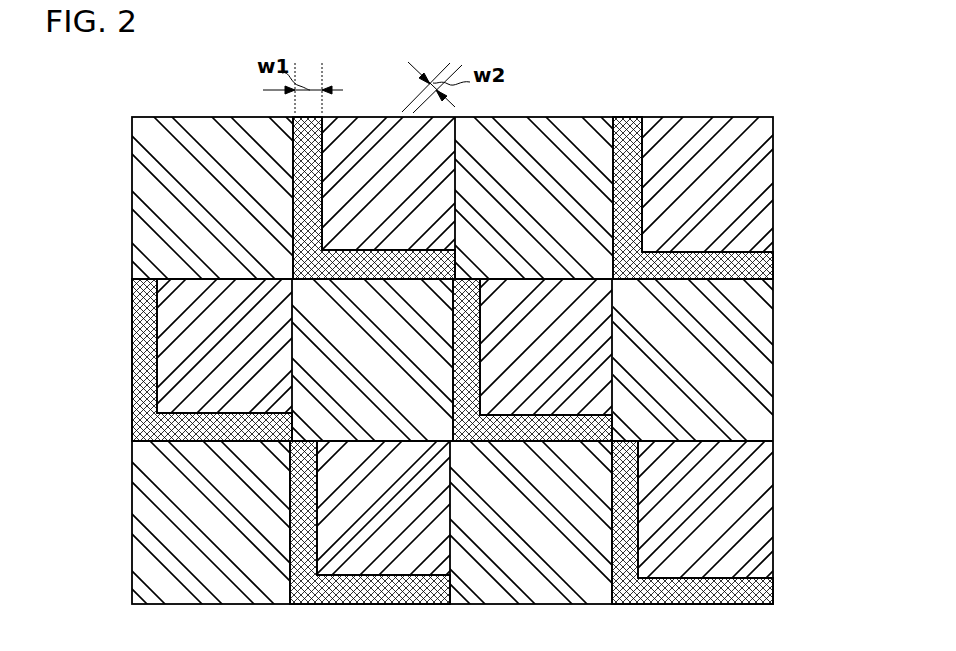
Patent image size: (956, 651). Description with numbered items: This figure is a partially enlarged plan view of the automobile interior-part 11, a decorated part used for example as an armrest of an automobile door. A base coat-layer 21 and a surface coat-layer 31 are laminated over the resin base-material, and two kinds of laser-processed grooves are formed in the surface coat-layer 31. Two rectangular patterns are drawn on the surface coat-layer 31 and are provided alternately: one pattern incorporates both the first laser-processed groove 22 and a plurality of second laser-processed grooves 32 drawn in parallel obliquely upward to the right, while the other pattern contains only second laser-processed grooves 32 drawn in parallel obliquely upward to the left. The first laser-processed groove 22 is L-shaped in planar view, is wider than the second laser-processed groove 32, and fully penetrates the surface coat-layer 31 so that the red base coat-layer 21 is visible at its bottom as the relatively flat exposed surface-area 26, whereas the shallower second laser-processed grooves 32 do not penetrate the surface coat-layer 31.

The automobile interior-part 11 is at (103, 155).
The base coat-layer 21 is at (418, 592).
The first laser-processed groove 22 is at (302, 548).
The exposed surface-area 26 is at (345, 592).
The surface coat-layer 31 is at (752, 375).
The second laser-processed groove 32 is at (715, 505).